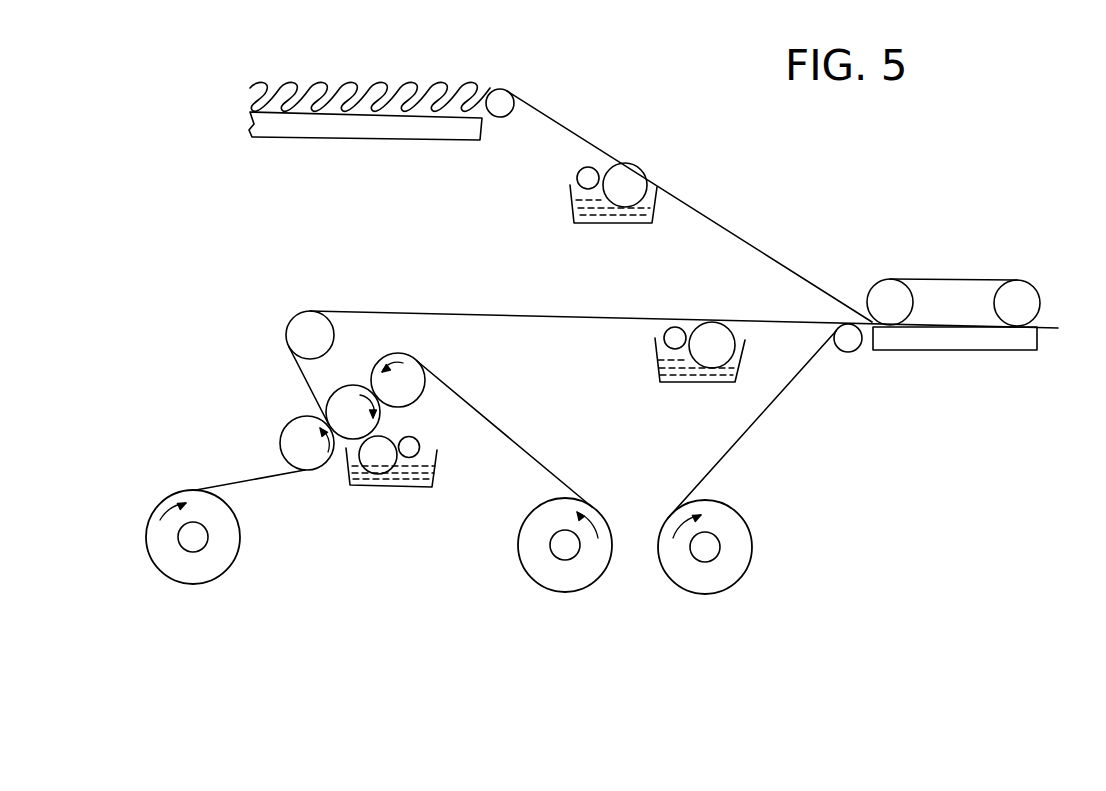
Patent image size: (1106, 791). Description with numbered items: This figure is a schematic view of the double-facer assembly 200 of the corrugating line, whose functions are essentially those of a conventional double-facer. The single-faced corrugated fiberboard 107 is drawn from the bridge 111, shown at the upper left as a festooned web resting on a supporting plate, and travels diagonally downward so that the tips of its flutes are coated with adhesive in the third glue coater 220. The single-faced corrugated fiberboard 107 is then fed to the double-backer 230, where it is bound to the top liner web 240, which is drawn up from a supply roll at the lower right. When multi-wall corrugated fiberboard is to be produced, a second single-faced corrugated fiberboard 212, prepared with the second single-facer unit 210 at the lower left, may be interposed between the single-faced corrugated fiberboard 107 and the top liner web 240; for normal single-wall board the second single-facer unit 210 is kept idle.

The double-facer assembly 200 is at (857, 568).
The single-faced corrugated fiberboard 107 is at (567, 120).
The bridge 111 is at (377, 136).
The second single-faced corrugated fiberboard 212 is at (482, 312).
The third glue coater 220 is at (617, 230).
The second single-facer unit 210 is at (383, 490).
The double-backer 230 is at (913, 355).
The top liner web 240 is at (763, 412).